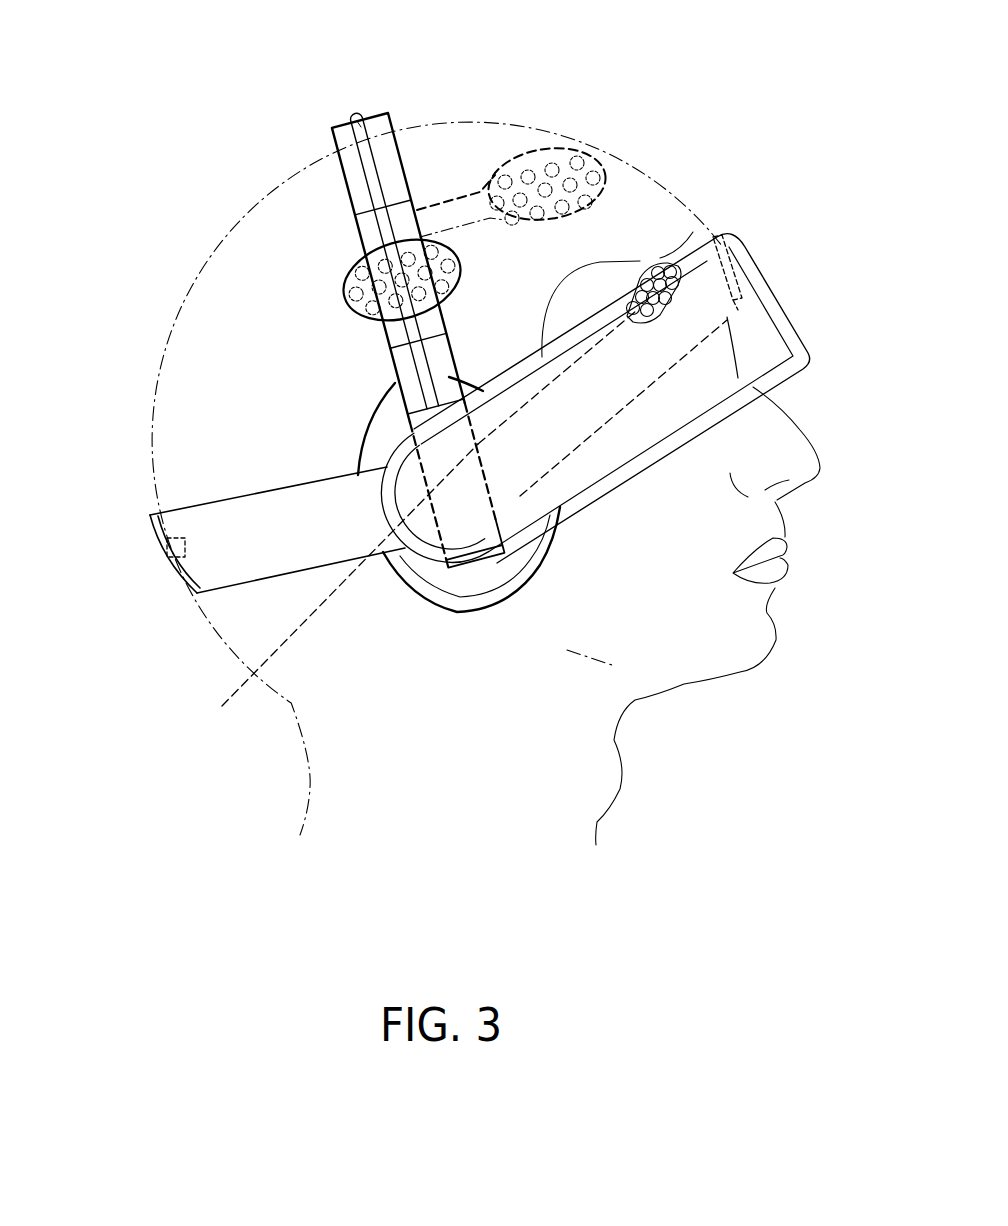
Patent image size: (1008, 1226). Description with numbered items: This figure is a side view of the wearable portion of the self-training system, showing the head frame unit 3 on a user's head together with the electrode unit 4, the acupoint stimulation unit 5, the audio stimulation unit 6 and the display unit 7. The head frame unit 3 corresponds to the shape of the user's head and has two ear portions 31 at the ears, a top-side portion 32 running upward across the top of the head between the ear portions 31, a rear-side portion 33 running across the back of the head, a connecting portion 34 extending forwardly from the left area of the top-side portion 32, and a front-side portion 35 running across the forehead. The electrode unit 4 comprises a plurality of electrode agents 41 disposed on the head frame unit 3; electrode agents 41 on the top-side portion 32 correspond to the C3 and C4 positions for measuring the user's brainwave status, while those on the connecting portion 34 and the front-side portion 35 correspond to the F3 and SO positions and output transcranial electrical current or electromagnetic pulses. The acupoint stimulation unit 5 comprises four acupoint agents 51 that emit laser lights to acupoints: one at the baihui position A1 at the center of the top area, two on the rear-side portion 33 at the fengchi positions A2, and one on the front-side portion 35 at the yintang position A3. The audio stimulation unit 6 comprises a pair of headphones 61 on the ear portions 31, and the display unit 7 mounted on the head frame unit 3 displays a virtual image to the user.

The head frame unit 3 is at (461, 374).
The ear portions 31 is at (222, 706).
The top-side portion 32 is at (368, 118).
The rear-side portion 33 is at (235, 514).
The connecting portion 34 is at (455, 197).
The front-side portion 35 is at (697, 328).
The electrode unit 4 is at (597, 136).
The electrode agents 41 is at (347, 267).
The acupoint stimulation unit 5 is at (178, 524).
The acupoint agents 51 is at (183, 555).
The audio stimulation unit 6 is at (408, 586).
The headphones 61 is at (473, 583).
The display unit 7 is at (635, 392).
The baihui acupoint position A1 is at (359, 120).
The fengchi acupoint positions A2 is at (165, 548).
The yintang acupoint position A3 is at (727, 267).